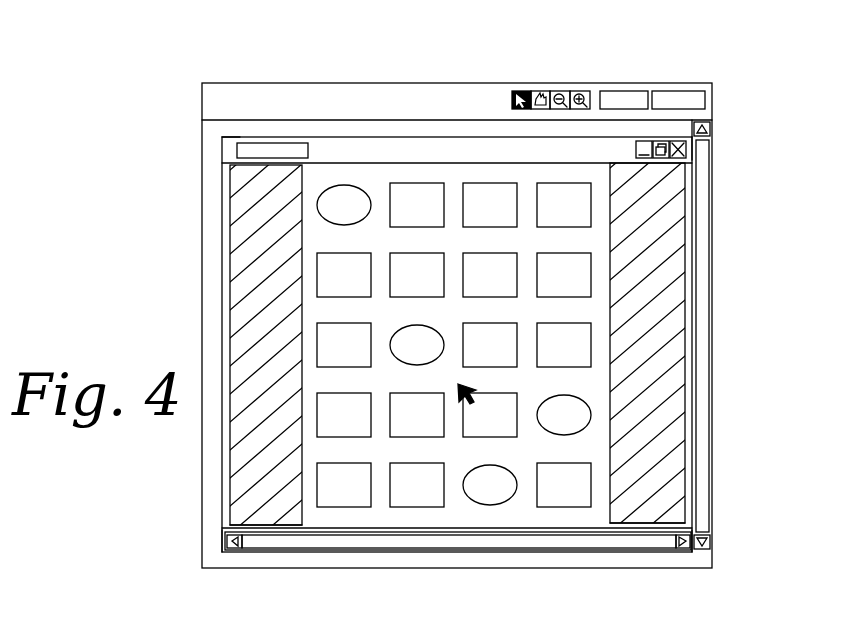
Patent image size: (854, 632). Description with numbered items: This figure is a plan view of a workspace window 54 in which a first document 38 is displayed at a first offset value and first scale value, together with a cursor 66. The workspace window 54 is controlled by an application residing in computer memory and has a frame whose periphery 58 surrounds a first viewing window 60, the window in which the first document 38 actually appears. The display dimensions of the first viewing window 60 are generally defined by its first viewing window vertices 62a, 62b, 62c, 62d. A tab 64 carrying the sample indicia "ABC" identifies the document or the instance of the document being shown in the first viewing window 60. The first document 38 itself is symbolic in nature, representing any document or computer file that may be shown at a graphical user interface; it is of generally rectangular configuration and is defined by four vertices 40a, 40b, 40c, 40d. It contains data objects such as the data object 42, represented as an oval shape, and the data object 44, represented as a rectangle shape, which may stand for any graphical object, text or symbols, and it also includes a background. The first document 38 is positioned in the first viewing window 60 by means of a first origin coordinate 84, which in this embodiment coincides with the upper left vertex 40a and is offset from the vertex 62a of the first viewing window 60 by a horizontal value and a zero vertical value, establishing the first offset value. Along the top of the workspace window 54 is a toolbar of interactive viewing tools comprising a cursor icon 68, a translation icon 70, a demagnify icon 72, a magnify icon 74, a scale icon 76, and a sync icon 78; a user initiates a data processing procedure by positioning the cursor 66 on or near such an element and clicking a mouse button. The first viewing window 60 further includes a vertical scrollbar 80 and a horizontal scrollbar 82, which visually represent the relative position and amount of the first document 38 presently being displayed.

The first document 38 is at (423, 346).
The vertex 40a is at (302, 166).
The vertex 40b is at (612, 163).
The vertex 40c is at (607, 523).
The vertex 40d is at (305, 525).
The data object 42 is at (345, 188).
The data object 44 is at (428, 226).
The workspace window 54 is at (329, 85).
The periphery 58 is at (202, 265).
The first viewing window 60 is at (418, 146).
The first viewing window vertex 62a is at (233, 163).
The first viewing window vertex 62b is at (692, 162).
The first viewing window vertex 62c is at (692, 528).
The first viewing window vertex 62d is at (227, 528).
The tab 64 is at (240, 145).
The cursor 66 is at (476, 388).
The cursor icon 68 is at (526, 91).
The translation icon 70 is at (545, 91).
The demagnify icon 72 is at (572, 91).
The magnify icon 74 is at (590, 91).
The scale icon 76 is at (634, 91).
The sync icon 78 is at (676, 91).
The vertical scrollbar 80 is at (708, 237).
The horizontal scrollbar 82 is at (278, 549).
The first origin coordinate 84 is at (200, 349).